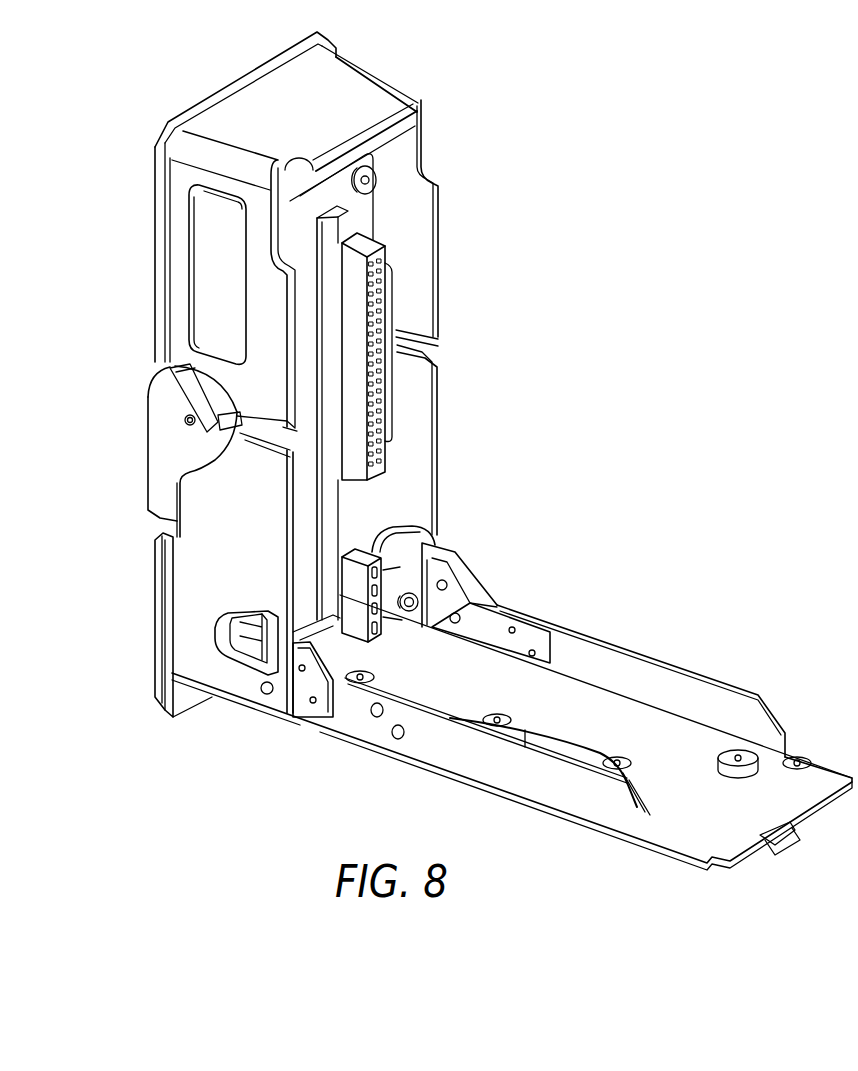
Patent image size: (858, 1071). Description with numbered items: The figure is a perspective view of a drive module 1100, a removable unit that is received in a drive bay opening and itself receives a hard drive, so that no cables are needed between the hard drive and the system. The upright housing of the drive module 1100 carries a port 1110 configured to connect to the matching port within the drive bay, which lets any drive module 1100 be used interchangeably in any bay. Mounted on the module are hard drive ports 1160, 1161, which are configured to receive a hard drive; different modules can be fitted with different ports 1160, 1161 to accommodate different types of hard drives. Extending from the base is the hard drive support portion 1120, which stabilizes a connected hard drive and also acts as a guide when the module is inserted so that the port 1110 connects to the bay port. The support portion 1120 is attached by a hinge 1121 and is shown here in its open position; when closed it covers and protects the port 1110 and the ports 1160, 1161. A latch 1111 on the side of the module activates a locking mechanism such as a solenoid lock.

The drive module 1100 is at (614, 318).
The port 1110 is at (298, 183).
The latch 1111 is at (155, 497).
The hard drive support portion 1120 is at (508, 795).
The hinge 1121 is at (267, 695).
The hard drive port 1160 is at (438, 535).
The hard drive port 1161 is at (387, 354).